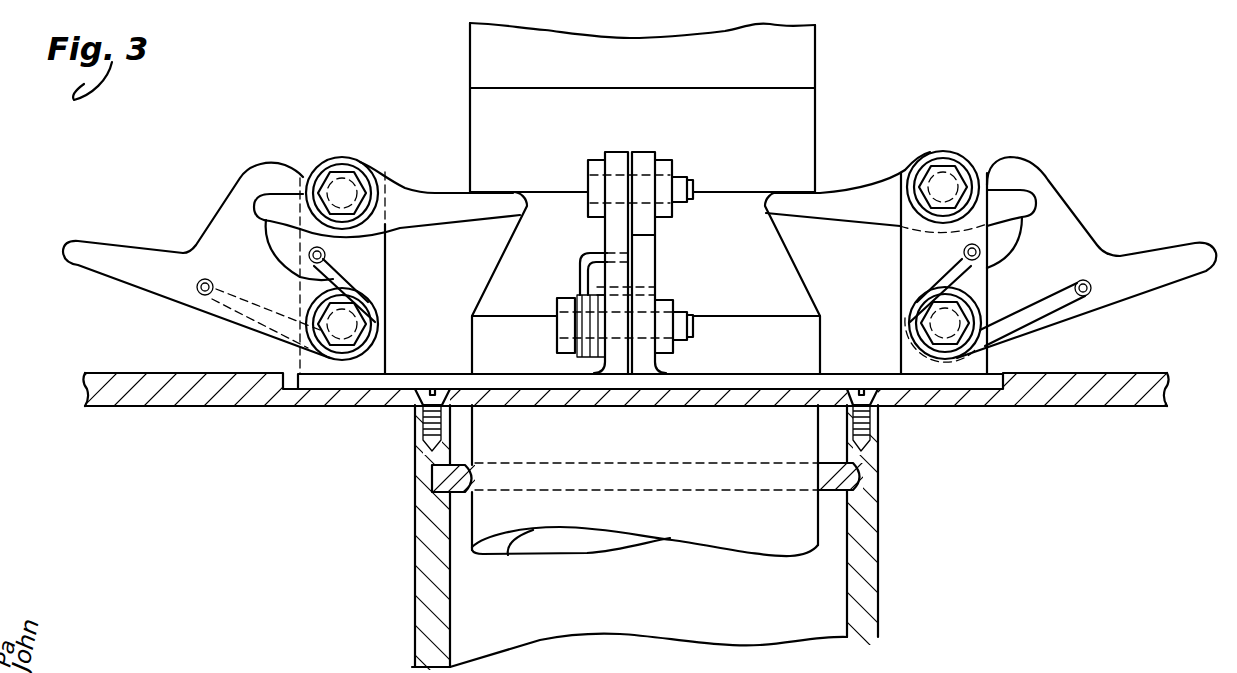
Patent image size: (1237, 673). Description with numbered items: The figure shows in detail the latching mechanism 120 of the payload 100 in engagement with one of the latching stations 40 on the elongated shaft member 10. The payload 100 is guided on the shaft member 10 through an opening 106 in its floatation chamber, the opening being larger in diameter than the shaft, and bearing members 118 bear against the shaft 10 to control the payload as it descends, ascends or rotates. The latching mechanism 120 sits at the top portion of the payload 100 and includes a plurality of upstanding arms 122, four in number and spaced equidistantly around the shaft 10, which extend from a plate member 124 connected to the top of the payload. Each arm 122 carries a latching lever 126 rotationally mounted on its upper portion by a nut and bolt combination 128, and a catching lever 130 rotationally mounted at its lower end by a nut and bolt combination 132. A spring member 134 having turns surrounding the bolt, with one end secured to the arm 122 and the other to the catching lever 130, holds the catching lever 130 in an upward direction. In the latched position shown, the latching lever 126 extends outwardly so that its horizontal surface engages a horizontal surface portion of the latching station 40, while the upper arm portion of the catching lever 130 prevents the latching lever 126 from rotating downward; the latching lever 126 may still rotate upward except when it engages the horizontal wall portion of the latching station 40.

The elongated shaft member 10 is at (817, 58).
The latching station 40 is at (790, 256).
The payload 100 is at (237, 388).
The opening 106 is at (425, 613).
The bearing members 118 is at (460, 510).
The latching mechanism 120 is at (948, 100).
The upstanding arms 122 is at (370, 275).
The plate member 124 is at (537, 352).
The latching lever 126 is at (435, 200).
The nut and bolt combination 128 is at (343, 186).
The catching lever 130 is at (147, 263).
The nut and bolt combination 132 is at (347, 323).
The spring member 134 is at (262, 322).